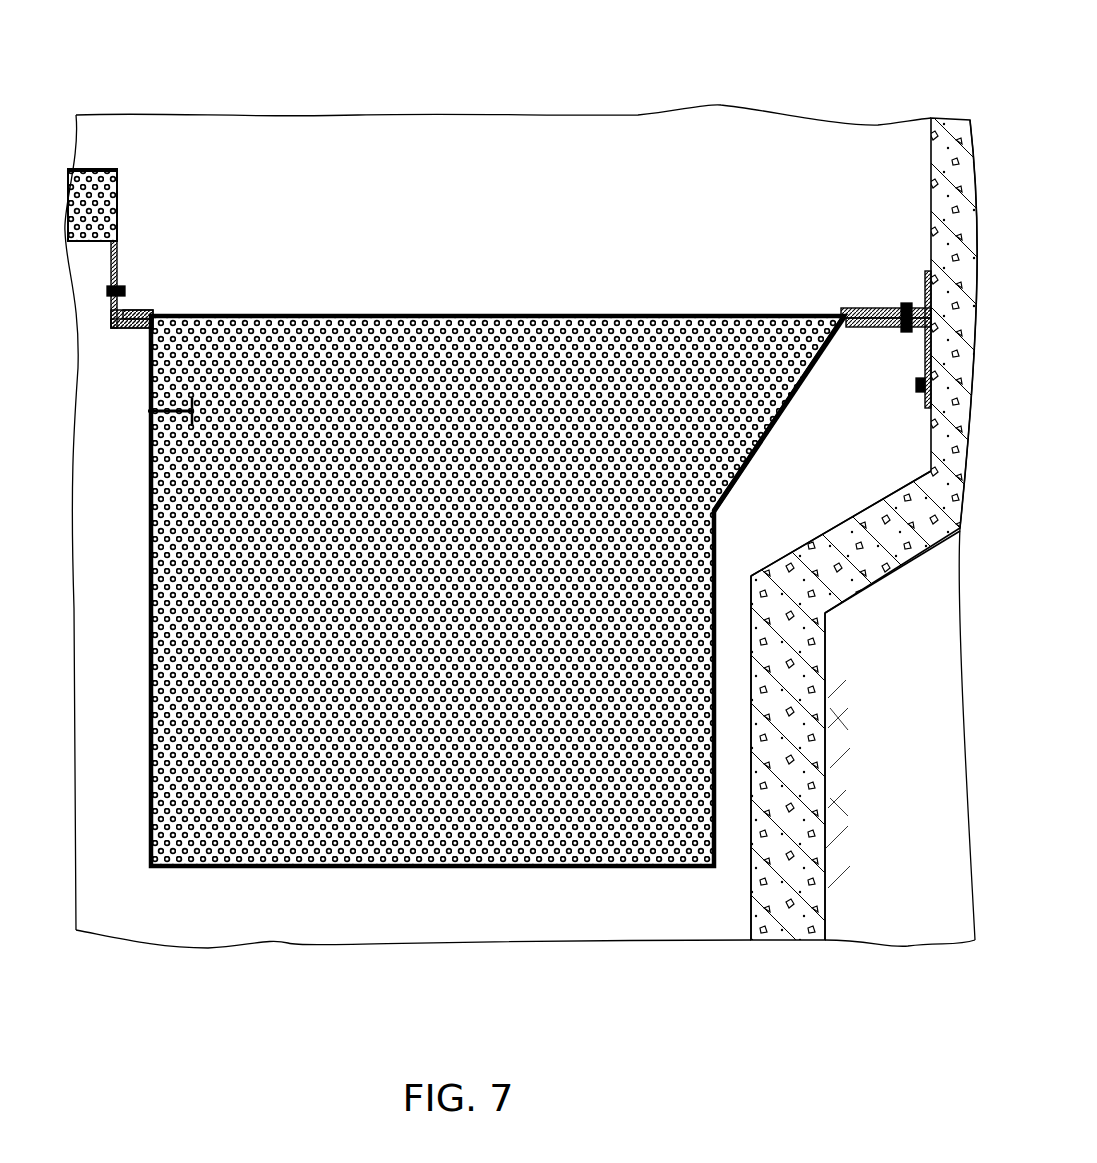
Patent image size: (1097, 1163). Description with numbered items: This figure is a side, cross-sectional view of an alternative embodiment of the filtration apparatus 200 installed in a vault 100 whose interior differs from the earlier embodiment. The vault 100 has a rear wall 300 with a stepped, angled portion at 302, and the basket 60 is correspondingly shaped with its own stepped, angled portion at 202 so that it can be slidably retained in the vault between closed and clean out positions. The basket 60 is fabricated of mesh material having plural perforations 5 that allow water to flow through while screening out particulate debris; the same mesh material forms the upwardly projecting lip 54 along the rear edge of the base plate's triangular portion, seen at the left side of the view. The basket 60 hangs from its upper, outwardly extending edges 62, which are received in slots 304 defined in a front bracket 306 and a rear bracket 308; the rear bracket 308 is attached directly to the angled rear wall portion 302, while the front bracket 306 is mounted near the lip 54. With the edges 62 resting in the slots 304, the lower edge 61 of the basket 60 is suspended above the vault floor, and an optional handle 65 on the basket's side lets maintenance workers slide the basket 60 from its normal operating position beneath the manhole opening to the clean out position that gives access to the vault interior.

The vault 100 is at (882, 88).
The filtration apparatus 200 is at (359, 134).
The rear wall 300 is at (922, 157).
The stepped, angled portion 302 is at (812, 531).
The slots 304 is at (122, 302).
The front bracket 306 is at (109, 252).
The rear bracket 308 is at (917, 282).
The outwardly extending edges 62 is at (135, 311).
The basket 60 is at (488, 296).
The lower edge 61 is at (355, 858).
The handle 65 is at (156, 405).
The upwardly projecting lip 54 is at (109, 190).
The perforations 5 is at (93, 172).
The stepped, angled portion 202 is at (768, 416).